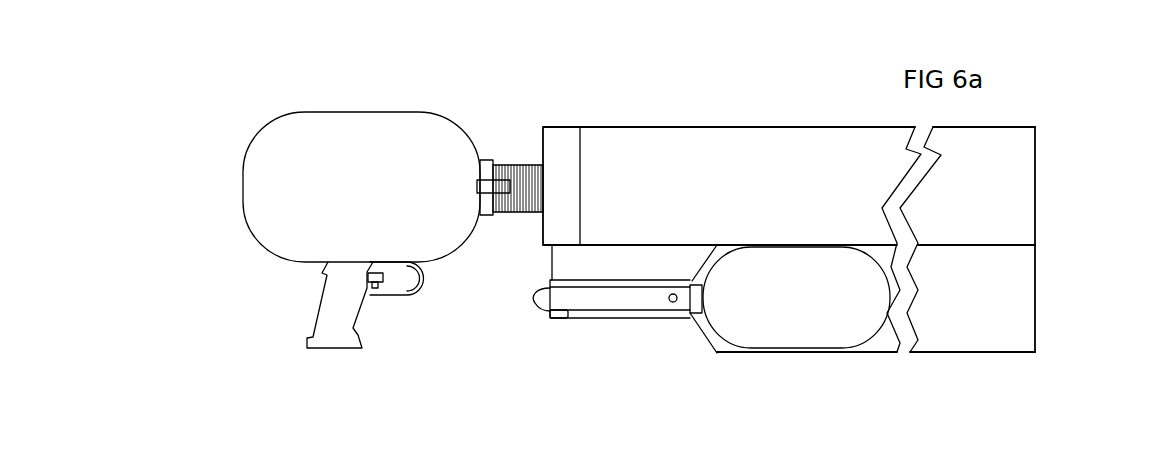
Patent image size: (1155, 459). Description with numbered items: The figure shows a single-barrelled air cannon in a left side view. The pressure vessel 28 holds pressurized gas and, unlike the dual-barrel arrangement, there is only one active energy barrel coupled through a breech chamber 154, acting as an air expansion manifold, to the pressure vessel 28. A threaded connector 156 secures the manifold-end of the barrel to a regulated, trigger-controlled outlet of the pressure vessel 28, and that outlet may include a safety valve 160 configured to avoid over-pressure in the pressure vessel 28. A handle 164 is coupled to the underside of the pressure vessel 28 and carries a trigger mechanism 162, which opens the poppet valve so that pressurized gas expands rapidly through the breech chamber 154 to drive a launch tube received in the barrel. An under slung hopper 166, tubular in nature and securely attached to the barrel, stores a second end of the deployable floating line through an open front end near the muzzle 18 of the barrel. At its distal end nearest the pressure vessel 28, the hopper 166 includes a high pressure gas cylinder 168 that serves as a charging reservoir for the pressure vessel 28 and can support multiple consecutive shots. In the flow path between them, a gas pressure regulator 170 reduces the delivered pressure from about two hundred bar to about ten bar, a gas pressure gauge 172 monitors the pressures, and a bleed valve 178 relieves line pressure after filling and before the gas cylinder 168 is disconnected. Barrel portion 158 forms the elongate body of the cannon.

The muzzle 18 is at (1045, 177).
The pressure vessel 28 is at (347, 140).
The breech chamber 154 is at (565, 140).
The threaded connector 156 is at (512, 163).
The upper housing 158 is at (742, 158).
The safety valve 160 is at (488, 176).
The trigger mechanism 162 is at (375, 285).
The handle 164 is at (320, 320).
The hopper 166 is at (967, 348).
The gas cylinder 168 is at (828, 315).
The gas pressure regulator 170 is at (605, 300).
The gas pressure gauge 172 is at (672, 303).
The bleed valve 178 is at (530, 302).